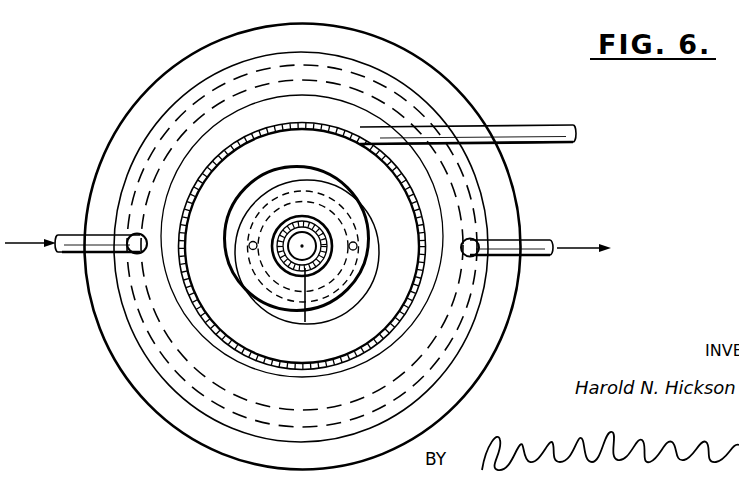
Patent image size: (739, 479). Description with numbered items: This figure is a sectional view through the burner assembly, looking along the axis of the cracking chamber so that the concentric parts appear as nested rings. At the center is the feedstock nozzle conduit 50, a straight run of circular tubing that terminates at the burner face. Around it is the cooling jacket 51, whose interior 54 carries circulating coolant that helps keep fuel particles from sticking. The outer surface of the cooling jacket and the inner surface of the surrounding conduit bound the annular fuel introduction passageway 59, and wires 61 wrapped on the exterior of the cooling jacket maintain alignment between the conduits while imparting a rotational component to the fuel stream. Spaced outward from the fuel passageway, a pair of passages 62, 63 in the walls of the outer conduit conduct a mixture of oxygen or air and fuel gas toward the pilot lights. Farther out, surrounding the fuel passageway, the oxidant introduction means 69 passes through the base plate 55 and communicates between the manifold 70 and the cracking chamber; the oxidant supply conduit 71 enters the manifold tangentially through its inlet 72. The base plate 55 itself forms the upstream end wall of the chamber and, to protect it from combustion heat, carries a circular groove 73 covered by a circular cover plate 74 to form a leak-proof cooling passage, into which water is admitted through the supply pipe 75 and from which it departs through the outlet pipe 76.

The conduit 50 is at (316, 267).
The cooling jacket 51 is at (293, 267).
The interior of cooling jacket 54 is at (305, 322).
The base plate 55 is at (464, 113).
The annular fuel introduction passageway 59 is at (317, 215).
The wires 61 is at (283, 258).
The passage 62 is at (249, 244).
The passage 63 is at (358, 247).
The oxidant introduction means 69 is at (295, 175).
The manifold 70 is at (325, 123).
The oxidant supply conduit 71 is at (532, 133).
The inlet 72 is at (355, 138).
The circular groove 73 is at (421, 99).
The circular cover plate 74 is at (366, 72).
The supply pipe 75 is at (70, 236).
The outlet pipe 76 is at (540, 241).